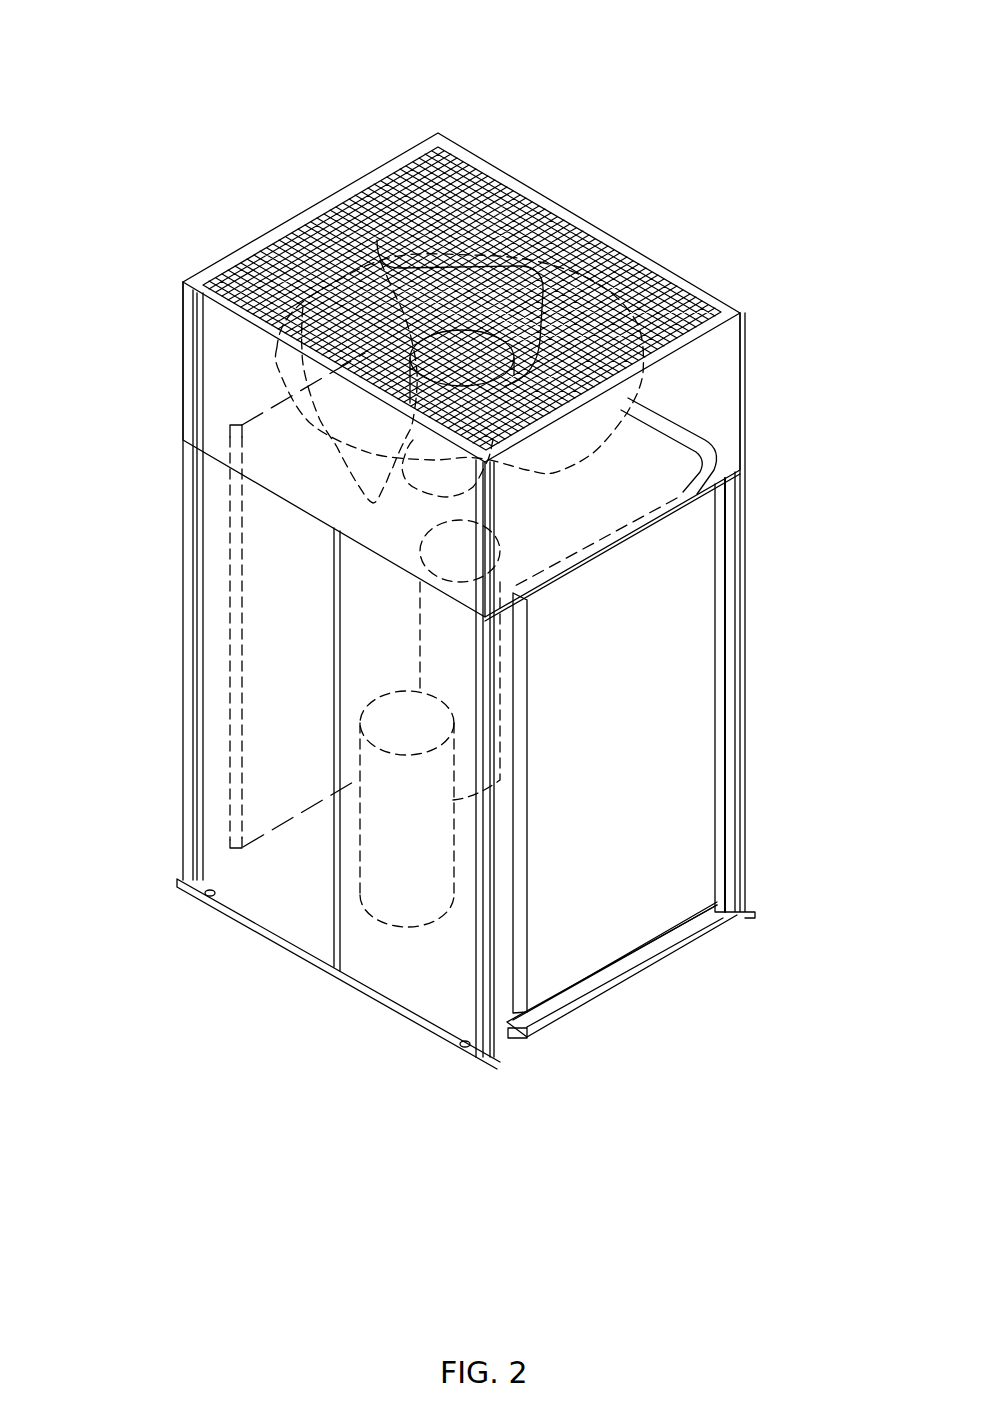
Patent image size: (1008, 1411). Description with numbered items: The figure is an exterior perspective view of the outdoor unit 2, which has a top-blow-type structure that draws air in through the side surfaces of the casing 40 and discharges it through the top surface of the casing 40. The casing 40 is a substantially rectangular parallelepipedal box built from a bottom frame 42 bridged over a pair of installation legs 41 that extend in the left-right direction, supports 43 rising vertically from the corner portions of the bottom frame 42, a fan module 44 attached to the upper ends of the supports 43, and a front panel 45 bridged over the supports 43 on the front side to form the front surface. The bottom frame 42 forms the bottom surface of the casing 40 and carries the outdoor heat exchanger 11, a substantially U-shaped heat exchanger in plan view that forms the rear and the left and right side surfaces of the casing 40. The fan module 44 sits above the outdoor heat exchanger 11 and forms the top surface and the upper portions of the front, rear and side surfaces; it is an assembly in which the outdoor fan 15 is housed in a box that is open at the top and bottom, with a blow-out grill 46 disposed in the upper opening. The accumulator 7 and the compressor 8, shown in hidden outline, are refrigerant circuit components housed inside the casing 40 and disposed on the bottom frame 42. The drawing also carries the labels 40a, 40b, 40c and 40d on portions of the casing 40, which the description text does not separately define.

The outdoor unit 2 is at (752, 108).
The accumulator 7 is at (420, 588).
The compressor 8 is at (360, 840).
The outdoor heat exchanger 11 is at (695, 662).
The outdoor fan 15 is at (550, 245).
The casing 40 is at (686, 233).
The duct 40a is at (695, 410).
The duct 40b is at (210, 432).
The side frame 40c is at (703, 607).
The duct 40d is at (390, 272).
The installation legs 41 is at (365, 990).
The bottom frame 42 is at (617, 987).
The supports 43 is at (183, 707).
The fan module 44 is at (750, 412).
The front panel 45 is at (222, 797).
The blow-out grill 46 is at (480, 185).